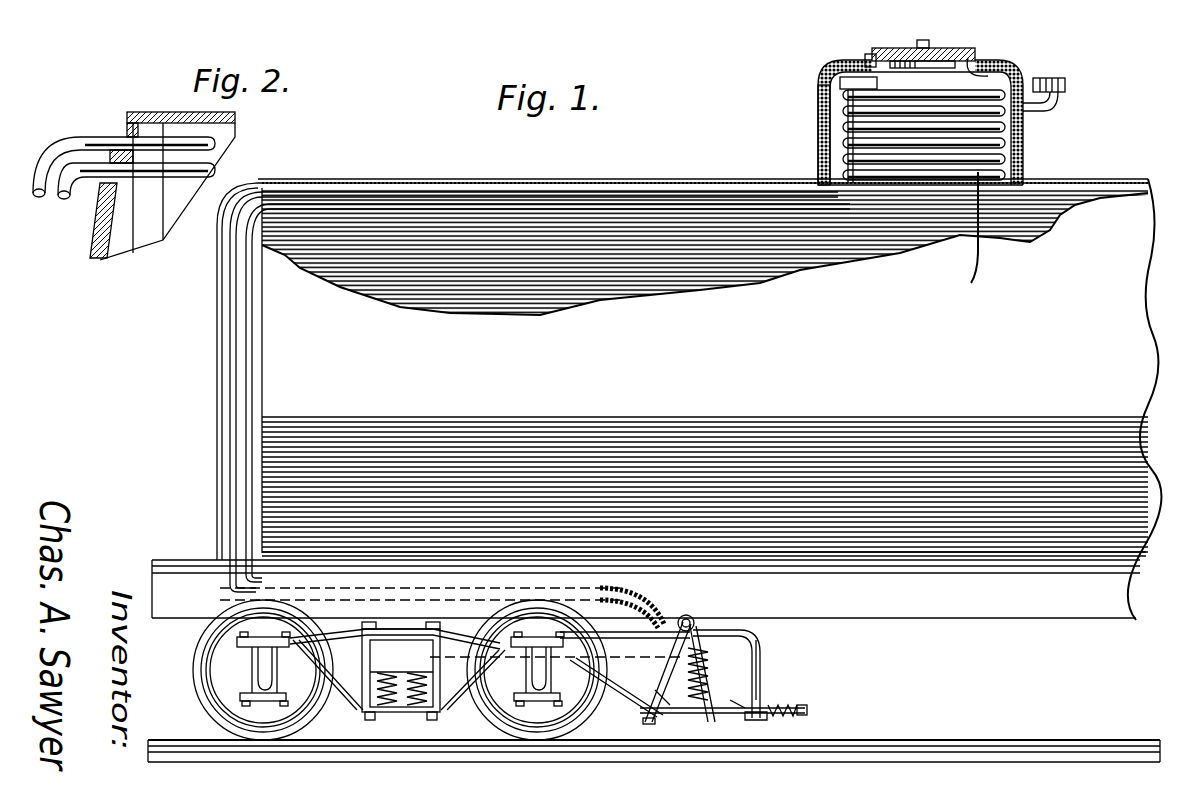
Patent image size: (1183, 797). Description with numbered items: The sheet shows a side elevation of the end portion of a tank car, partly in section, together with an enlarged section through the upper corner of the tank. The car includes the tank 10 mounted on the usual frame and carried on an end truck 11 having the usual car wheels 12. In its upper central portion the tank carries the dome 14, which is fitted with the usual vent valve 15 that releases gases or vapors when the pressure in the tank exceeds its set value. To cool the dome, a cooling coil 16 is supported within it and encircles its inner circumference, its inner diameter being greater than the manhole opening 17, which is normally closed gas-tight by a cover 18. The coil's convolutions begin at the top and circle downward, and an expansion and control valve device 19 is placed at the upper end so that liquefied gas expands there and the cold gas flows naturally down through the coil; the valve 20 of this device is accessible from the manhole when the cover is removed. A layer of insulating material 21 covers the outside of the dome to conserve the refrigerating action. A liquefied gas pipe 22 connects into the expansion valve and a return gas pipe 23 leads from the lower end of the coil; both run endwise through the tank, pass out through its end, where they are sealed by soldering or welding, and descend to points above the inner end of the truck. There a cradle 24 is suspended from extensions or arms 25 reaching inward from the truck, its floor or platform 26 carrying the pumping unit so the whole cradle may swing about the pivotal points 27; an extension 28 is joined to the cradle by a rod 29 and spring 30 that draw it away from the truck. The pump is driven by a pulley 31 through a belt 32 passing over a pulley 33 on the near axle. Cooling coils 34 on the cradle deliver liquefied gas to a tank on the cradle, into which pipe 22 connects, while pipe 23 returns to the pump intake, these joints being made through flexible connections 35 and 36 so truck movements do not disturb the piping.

In FIG. 1, the tank 10 is at (689, 399).
In FIG. 2, the tank 10 is at (173, 112).
In FIG. 1, the end truck 11 is at (370, 718).
In FIG. 1, the car wheels 12 is at (218, 692).
In FIG. 1, the dome 14 is at (817, 107).
In FIG. 1, the vent valve 15 is at (1060, 107).
In FIG. 1, the cooling coil 16 is at (984, 236).
In FIG. 1, the manhole opening 17 is at (972, 72).
In FIG. 1, the cover 18 is at (945, 46).
In FIG. 1, the expansion and control valve 19 is at (830, 63).
In FIG. 1, the valve 20 is at (866, 74).
In FIG. 1, the insulating material 21 is at (823, 140).
In FIG. 1, the liquefied gas pipe 22 is at (437, 193).
In FIG. 2, the liquefied gas pipe 22 is at (83, 137).
In FIG. 1, the return gas pipe 23 is at (550, 203).
In FIG. 2, the return gas pipe 23 is at (78, 198).
In FIG. 1, the cradle 24 is at (714, 720).
In FIG. 1, the extensions or arms 25 is at (688, 655).
In FIG. 1, the floor or platform 26 is at (660, 720).
In FIG. 1, the pivotal points 27 is at (697, 620).
In FIG. 1, the extension 28 is at (767, 665).
In FIG. 1, the rod 29 is at (737, 697).
In FIG. 1, the spring 30 is at (780, 703).
In FIG. 1, the pulley 31 is at (693, 717).
In FIG. 1, the belt 32 is at (650, 695).
In FIG. 1, the axle pulley 33 is at (490, 665).
In FIG. 1, the cooling coils 34 is at (755, 667).
In FIG. 1, the flexible connection 35 is at (653, 607).
In FIG. 1, the flexible connection 36 is at (640, 595).